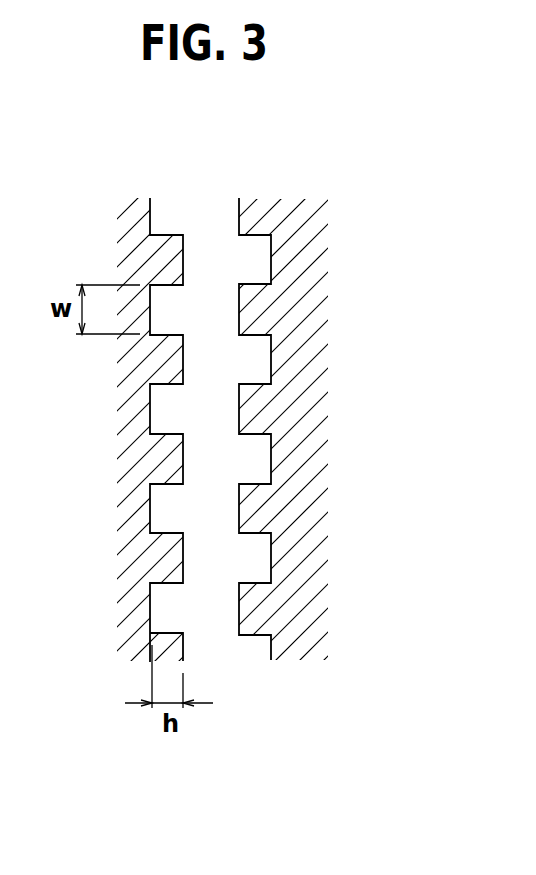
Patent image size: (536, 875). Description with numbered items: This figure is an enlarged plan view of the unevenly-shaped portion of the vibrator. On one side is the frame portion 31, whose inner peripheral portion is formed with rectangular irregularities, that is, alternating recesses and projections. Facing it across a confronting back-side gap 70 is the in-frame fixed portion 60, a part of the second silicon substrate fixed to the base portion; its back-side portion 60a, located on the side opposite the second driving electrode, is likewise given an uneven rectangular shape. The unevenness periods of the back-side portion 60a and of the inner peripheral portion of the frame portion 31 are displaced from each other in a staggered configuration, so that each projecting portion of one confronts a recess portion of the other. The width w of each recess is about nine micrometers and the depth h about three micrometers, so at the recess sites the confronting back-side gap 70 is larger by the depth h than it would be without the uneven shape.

The frame portion 31 is at (140, 200).
The confronting back-side gap 70 is at (194, 212).
The in-frame fixed portion 60 is at (268, 487).
The back-side portion 60a is at (239, 212).